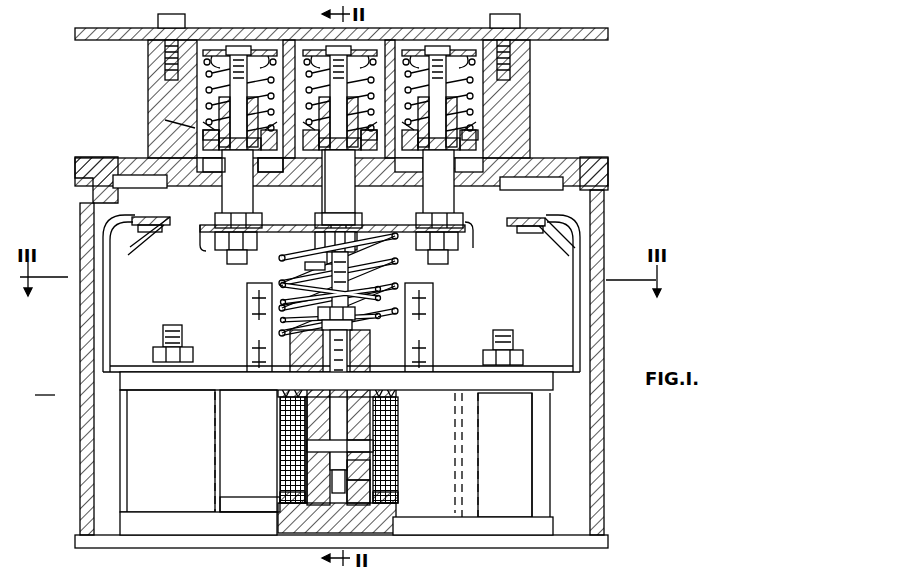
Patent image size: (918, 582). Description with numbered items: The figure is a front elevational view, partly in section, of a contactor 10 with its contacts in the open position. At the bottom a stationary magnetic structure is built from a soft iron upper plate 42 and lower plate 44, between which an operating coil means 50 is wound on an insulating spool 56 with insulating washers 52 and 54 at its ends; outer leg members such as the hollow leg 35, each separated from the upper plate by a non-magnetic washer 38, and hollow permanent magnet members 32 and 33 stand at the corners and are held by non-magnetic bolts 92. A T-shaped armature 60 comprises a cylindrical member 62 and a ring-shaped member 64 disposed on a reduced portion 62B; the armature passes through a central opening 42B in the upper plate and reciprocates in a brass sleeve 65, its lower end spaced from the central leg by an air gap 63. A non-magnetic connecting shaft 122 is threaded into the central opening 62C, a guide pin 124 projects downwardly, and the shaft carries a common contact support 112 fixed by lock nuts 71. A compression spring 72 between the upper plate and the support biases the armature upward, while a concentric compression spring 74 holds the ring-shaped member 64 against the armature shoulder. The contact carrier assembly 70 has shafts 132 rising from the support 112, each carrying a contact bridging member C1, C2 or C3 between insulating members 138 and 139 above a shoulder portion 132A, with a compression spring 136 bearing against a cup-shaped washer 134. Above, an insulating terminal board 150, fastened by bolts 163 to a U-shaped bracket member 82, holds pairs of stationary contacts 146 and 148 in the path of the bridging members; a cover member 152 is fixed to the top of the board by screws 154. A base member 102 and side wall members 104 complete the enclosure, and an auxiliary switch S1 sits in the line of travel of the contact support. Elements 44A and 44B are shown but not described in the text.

The contactor 10 is at (47, 386).
The permanent magnet member 32 is at (135, 458).
The permanent magnet member 33 is at (543, 441).
The outer magnetic leg member 35 is at (520, 483).
The non-magnetic washer 38 is at (505, 395).
The upper plate 42 is at (548, 382).
The central opening 42B is at (280, 380).
The lower plate 44 is at (546, 524).
The magnet core portion 44A is at (358, 491).
The magnet core portion 44B is at (371, 463).
The operating coil means 50 is at (225, 458).
The electrically insulating washer 52 is at (220, 410).
The electrically insulating washer 54 is at (250, 507).
The insulating spool 56 is at (302, 455).
The armature 60 is at (437, 420).
The cylindrical member 62 is at (376, 434).
The portion of reduced cross-section 62B is at (315, 411).
The internally threaded central opening 62C is at (325, 428).
The air gap 63 is at (371, 449).
The ring-shaped member 64 is at (387, 341).
The sleeve 65 is at (395, 498).
The contact carrier assembly 70 is at (380, 210).
The lock nut 71 is at (332, 245).
The compression spring 72 is at (399, 292).
The compression spring 74 is at (368, 280).
The U-shaped bracket member 82 is at (583, 252).
The non-magnetic bolt 92 is at (170, 325).
The base member 102 is at (525, 542).
The side wall member 104 is at (604, 472).
The common movable contact support 112 is at (473, 230).
The connecting shaft 122 is at (310, 300).
The guide pin 124 is at (302, 472).
The shaft 132 is at (245, 53).
The shoulder portion 132A is at (208, 174).
The cup-shaped washer 134 is at (216, 50).
The compression spring 136 is at (339, 119).
The electrical insulating member 138 is at (250, 102).
The electrical insulating member 139 is at (165, 120).
The stationary contact 146 is at (222, 170).
The stationary contact 148 is at (274, 182).
The insulating terminal board 150 is at (528, 97).
The cover plate 152 is at (598, 28).
The bolt 154 is at (158, 22).
The bolt 163 is at (150, 232).
The contact bridging member C1 is at (203, 137).
The contact bridging member C2 is at (370, 132).
The contact bridging member C3 is at (470, 137).
The auxiliary switch S1 is at (246, 289).